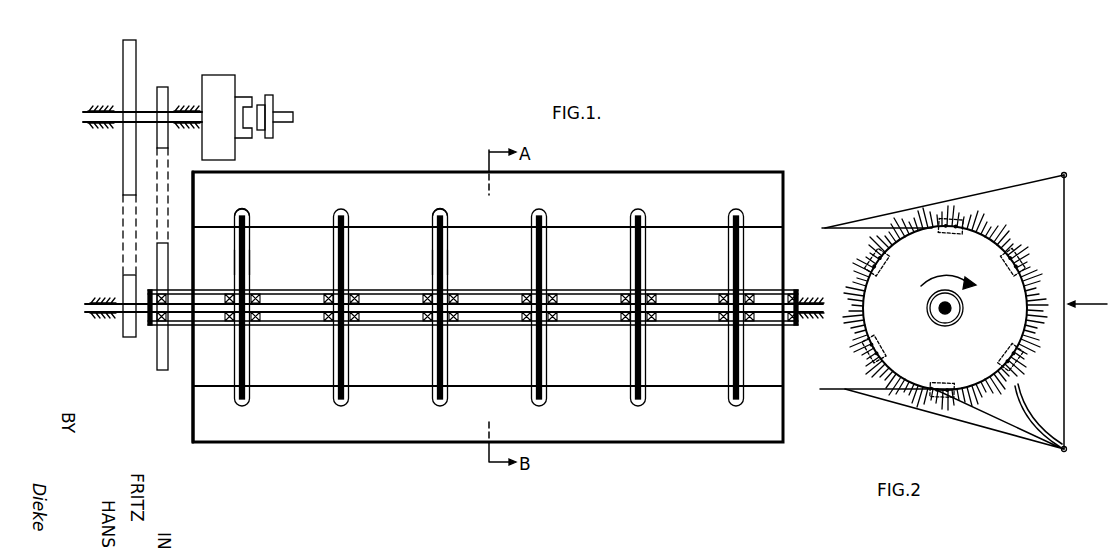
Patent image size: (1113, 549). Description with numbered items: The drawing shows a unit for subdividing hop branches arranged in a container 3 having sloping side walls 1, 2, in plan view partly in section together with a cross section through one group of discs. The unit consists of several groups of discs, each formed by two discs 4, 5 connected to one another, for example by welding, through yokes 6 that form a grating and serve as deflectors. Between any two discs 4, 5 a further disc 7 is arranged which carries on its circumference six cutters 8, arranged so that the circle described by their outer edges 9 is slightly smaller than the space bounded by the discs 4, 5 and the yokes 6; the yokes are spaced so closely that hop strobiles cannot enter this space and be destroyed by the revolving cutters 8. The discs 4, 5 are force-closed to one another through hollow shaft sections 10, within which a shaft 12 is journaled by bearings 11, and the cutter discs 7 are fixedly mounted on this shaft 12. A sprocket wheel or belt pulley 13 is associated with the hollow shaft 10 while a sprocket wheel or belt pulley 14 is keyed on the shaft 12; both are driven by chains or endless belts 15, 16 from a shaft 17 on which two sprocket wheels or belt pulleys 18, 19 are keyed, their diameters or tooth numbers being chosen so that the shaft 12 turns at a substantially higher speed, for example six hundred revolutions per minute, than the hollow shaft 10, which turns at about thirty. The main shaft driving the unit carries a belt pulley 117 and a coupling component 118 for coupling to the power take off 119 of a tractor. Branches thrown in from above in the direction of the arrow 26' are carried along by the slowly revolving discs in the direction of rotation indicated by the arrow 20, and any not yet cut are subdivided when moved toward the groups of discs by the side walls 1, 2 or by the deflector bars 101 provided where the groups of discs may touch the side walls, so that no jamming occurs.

In FIG. 1, the sloping side wall 1 is at (657, 178).
In FIG. 2, the sloping side wall 1 is at (1022, 188).
In FIG. 2, the sloping side wall 2 is at (846, 230).
In FIG. 1, the container 3 is at (194, 375).
In FIG. 2, the container 3 is at (1062, 238).
In FIG. 1, the disc 4 is at (236, 264).
In FIG. 1, the disc 5 is at (248, 258).
In FIG. 1, the yoke 6 is at (251, 214).
In FIG. 1, the disc 7 is at (246, 250).
In FIG. 1, the cutter 8 is at (236, 213).
In FIG. 2, the cutter 8 is at (1003, 283).
In FIG. 2, the outer edge 9 is at (856, 281).
In FIG. 1, the hollow shaft section 10 is at (206, 290).
In FIG. 1, the bearing 11 is at (262, 292).
In FIG. 1, the shaft 12 is at (493, 314).
In FIG. 1, the sprocket wheel or belt pulley 13 is at (160, 345).
In FIG. 1, the sprocket wheel or belt pulley 14 is at (124, 332).
In FIG. 1, the chain or endless belt 15 is at (165, 222).
In FIG. 1, the chain or endless belt 16 is at (128, 230).
In FIG. 1, the shaft 17 is at (197, 117).
In FIG. 1, the sprocket wheel or belt pulley 18 is at (128, 73).
In FIG. 1, the sprocket wheel or belt pulley 19 is at (164, 87).
In FIG. 2, the arrow 20 is at (921, 286).
In FIG. 2, the arrow 26' is at (1087, 288).
In FIG. 2, the deflector bar 101 is at (1043, 431).
In FIG. 1, the belt pulley 117 is at (223, 73).
In FIG. 1, the coupling component 118 is at (258, 96).
In FIG. 1, the power take off 119 is at (278, 117).